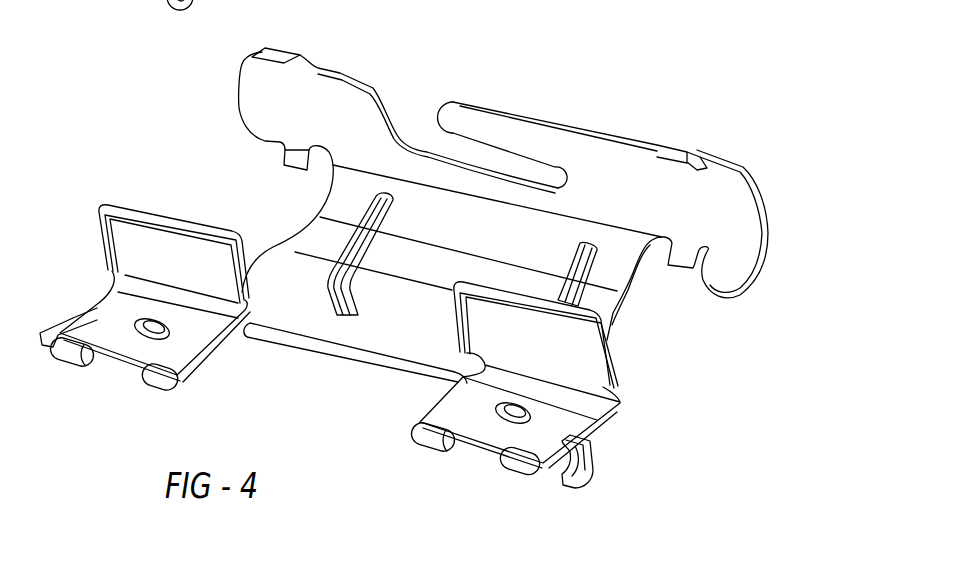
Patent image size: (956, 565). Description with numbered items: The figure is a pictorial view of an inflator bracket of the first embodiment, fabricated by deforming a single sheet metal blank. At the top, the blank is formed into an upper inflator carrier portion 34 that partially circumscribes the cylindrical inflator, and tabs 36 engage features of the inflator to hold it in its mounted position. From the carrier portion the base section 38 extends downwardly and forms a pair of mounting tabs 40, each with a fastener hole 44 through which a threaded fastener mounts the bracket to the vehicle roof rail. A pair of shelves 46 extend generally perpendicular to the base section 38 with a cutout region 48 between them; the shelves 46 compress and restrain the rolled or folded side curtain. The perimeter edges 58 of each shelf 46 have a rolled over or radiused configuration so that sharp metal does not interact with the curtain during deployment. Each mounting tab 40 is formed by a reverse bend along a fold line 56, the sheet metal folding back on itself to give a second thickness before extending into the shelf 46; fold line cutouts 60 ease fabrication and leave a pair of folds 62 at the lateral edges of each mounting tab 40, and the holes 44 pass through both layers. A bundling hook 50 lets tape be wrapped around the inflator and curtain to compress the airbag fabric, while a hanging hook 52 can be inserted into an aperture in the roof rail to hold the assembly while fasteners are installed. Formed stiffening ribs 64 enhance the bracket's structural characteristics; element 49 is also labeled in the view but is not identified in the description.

The upper inflator carrier portion 34 is at (570, 128).
The tabs 36 is at (287, 50).
The base section 38 is at (298, 293).
The mounting tabs 40 is at (83, 310).
The fastener holes 44 is at (148, 332).
The shelves 46 is at (157, 240).
The cutout region 48 is at (303, 345).
The fastener 49 is at (102, 9).
The bundling hook 50 is at (457, 113).
The hanging hook 52 is at (590, 477).
The fold line 56 is at (178, 16).
The perimeter edges 58 is at (100, 207).
The fold line cutouts 60 is at (450, 445).
The folds 62 is at (160, 378).
The stiffening ribs 64 is at (370, 215).